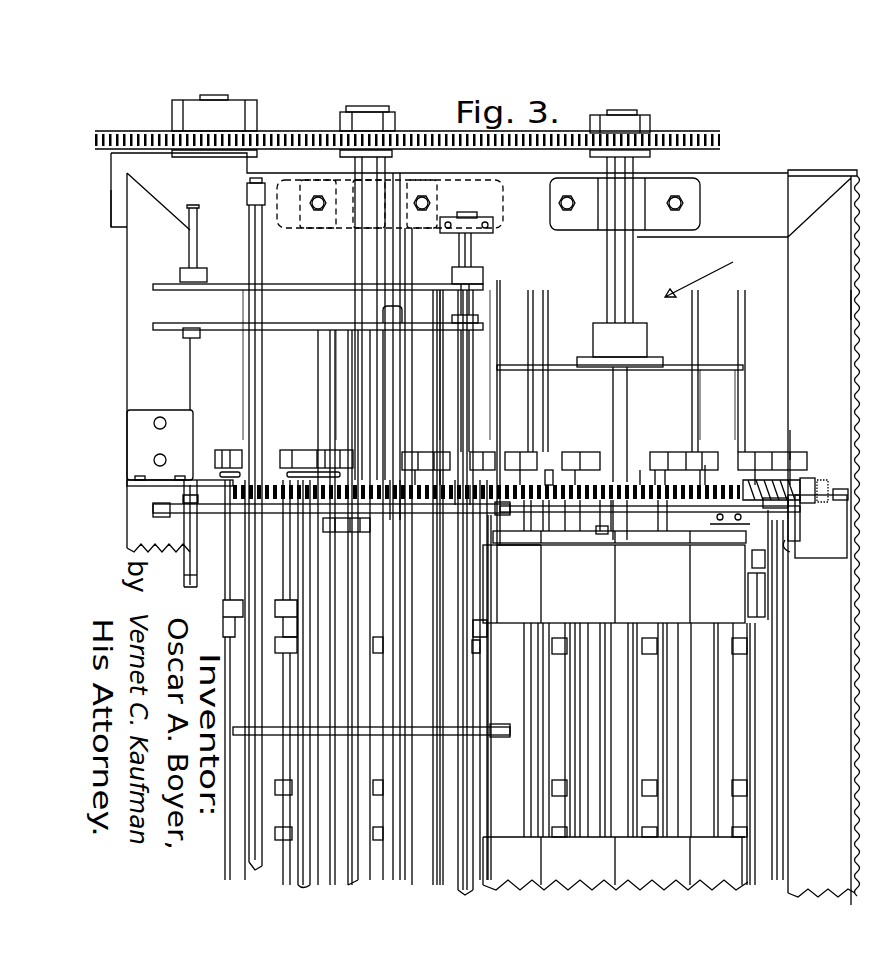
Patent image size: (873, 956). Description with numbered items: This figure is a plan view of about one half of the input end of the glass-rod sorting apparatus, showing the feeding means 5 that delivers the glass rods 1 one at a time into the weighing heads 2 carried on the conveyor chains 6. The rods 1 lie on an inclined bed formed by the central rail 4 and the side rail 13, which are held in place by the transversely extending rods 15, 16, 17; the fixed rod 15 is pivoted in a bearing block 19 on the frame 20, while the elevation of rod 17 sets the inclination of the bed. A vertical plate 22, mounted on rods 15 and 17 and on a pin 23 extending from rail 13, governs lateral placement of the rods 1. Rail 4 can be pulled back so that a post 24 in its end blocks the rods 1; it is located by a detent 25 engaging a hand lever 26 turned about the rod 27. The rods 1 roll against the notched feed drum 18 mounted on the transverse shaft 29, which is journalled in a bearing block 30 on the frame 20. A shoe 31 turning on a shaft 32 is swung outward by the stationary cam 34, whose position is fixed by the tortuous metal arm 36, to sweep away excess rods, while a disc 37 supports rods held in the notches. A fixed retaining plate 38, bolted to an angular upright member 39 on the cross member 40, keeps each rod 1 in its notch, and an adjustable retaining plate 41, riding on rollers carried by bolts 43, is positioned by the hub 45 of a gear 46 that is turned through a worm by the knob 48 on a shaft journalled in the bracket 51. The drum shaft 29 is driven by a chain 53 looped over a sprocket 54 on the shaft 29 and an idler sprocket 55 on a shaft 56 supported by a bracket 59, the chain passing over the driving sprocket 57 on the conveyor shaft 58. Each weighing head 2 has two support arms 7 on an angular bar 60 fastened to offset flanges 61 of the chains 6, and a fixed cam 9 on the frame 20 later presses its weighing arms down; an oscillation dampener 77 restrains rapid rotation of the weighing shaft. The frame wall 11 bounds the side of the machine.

The glass rod 1 is at (243, 388).
The weighing head 2 is at (247, 195).
The rail 4 is at (455, 514).
The feeding means 5 is at (704, 268).
The conveyor chain 6 is at (548, 470).
The support arm 7 is at (522, 458).
The fixed cam 9 is at (373, 483).
The frame wall 11 is at (862, 305).
The rail 13 is at (292, 323).
The rod 15 is at (478, 262).
The rod 16 is at (403, 360).
The rod 17 is at (263, 270).
The feed drum 18 is at (524, 624).
The bearing block 19 is at (452, 233).
The frame 20 is at (488, 173).
The vertical plate 22 is at (396, 288).
The pin 23 is at (198, 248).
The post 24 is at (494, 513).
The detent 25 is at (198, 533).
The hand lever 26 is at (180, 518).
The rod 27 is at (197, 578).
The transverse shaft 29 is at (634, 270).
The bearing block 30 is at (592, 232).
The shoe 31 is at (516, 540).
The shaft 32 is at (552, 545).
The stationary cam 34 is at (603, 538).
The tortuous metal arm 36 is at (500, 280).
The disc 37 is at (720, 365).
The fixed retaining plate 38 is at (647, 470).
The angular upright member 39 is at (795, 548).
The cross member 40 is at (792, 437).
The adjustable retaining plate 41 is at (705, 462).
The bolt 43 is at (722, 517).
The hub 45 is at (788, 508).
The gear 46 is at (805, 490).
The knob 48 is at (845, 500).
The bracket 51 is at (800, 527).
The chain 53 is at (152, 128).
The sprocket 54 is at (651, 124).
The idler sprocket 55 is at (257, 124).
The shaft 56 is at (228, 98).
The driving sprocket 57 is at (396, 116).
The conveyor shaft 58 is at (386, 163).
The bracket 59 is at (111, 200).
The angular bar 60 is at (421, 453).
The offset flange 61 is at (345, 228).
The oscillation dampener 77 is at (766, 597).